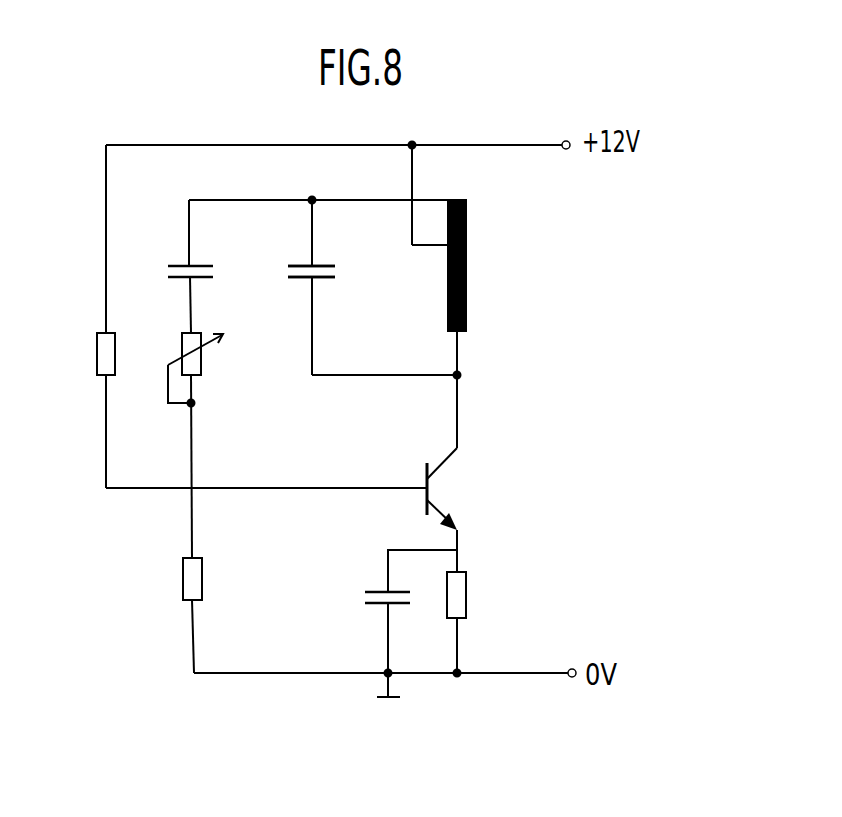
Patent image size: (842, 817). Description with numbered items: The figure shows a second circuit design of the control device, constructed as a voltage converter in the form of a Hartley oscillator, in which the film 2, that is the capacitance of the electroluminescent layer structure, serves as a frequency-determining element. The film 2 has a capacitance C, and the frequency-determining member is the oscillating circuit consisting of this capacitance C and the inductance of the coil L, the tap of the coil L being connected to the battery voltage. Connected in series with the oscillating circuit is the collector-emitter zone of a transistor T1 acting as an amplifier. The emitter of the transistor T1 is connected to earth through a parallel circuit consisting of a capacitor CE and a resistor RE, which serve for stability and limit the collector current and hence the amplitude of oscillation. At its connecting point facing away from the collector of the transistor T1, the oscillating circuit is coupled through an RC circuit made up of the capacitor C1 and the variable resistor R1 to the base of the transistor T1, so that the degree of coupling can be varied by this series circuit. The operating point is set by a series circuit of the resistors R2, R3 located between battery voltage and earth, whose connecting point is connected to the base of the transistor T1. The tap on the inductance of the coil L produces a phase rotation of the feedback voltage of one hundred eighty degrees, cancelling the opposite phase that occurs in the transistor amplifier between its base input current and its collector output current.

The capacitor C1 is at (198, 251).
The capacitance C is at (314, 251).
The film 2 is at (299, 296).
The coil L is at (469, 265).
The resistor R2 is at (87, 366).
The resistor R1 is at (200, 370).
The resistor R3 is at (210, 583).
The transistor T1 is at (456, 510).
The capacitor CE is at (402, 611).
The resistor RE is at (473, 622).